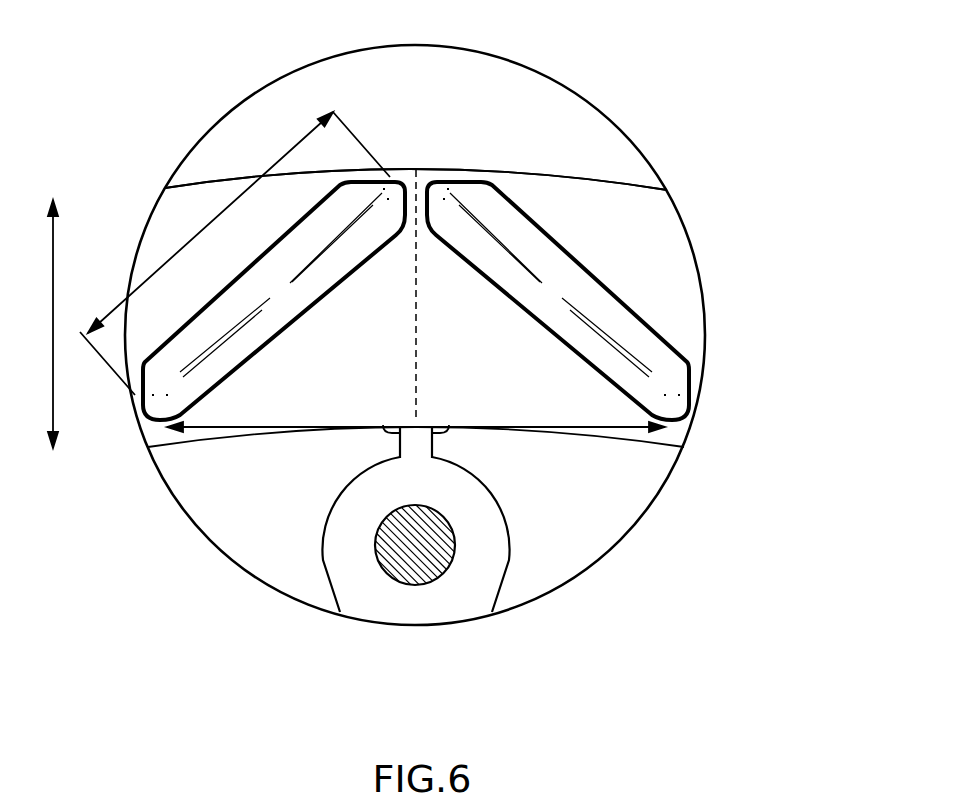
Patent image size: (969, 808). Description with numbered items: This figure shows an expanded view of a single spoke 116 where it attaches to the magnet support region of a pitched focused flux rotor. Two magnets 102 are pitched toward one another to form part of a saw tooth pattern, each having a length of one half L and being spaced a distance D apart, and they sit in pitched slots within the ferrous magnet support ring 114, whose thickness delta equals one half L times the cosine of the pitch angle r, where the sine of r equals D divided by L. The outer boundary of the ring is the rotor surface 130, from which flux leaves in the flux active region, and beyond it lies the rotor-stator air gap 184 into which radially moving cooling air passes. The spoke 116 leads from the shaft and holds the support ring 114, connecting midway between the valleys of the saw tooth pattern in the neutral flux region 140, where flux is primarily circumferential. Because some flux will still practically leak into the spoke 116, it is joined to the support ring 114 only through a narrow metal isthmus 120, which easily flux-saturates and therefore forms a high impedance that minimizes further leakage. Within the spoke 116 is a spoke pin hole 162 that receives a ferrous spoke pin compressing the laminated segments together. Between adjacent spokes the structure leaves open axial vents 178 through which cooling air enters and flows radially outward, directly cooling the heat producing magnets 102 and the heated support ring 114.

The neutral flux region 140 is at (740, 165).
The magnet support ring 114 is at (675, 282).
The rotor surface 130 is at (575, 177).
The rotor-stator air gap 184 is at (510, 115).
The axial vents 178 is at (590, 522).
The magnets 102 is at (437, 180).
The spoke 116 is at (487, 573).
The isthmus 120 is at (407, 435).
The spoke pin hole 162 is at (420, 563).